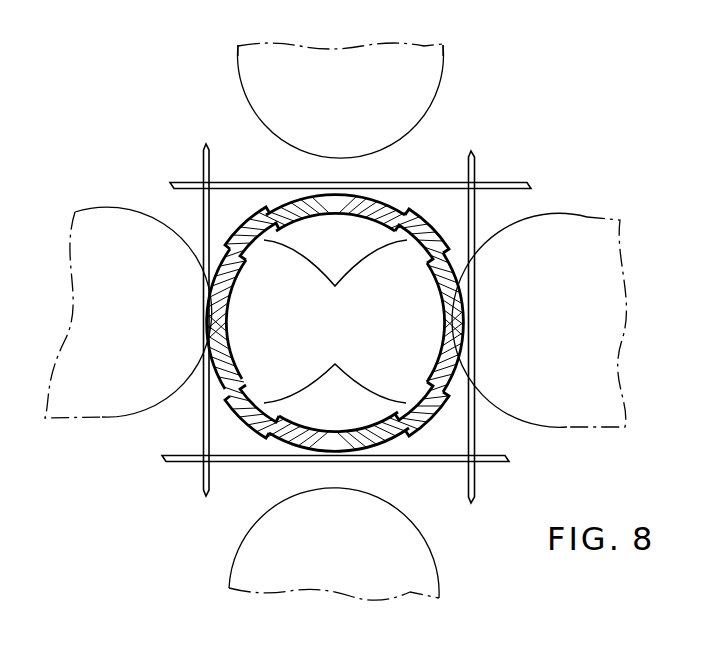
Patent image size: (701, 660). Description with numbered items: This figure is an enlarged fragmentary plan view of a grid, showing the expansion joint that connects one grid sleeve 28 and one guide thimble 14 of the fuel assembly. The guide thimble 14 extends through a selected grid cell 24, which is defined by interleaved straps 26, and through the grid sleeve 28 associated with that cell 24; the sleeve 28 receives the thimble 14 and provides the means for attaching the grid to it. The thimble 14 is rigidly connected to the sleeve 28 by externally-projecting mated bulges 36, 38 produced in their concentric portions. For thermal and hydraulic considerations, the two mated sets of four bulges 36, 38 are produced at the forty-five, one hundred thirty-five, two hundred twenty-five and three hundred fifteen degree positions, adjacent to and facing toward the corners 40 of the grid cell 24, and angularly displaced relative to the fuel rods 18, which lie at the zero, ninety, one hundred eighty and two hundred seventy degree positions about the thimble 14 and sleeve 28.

The guide thimble 14 is at (450, 315).
The fuel rod 18 is at (238, 78).
The grid cell 24 is at (410, 445).
The strap 26 is at (387, 182).
The grid sleeve 28 is at (463, 272).
The bulge 36 is at (335, 321).
The bulge 38 is at (247, 225).
The corner 40 is at (232, 206).